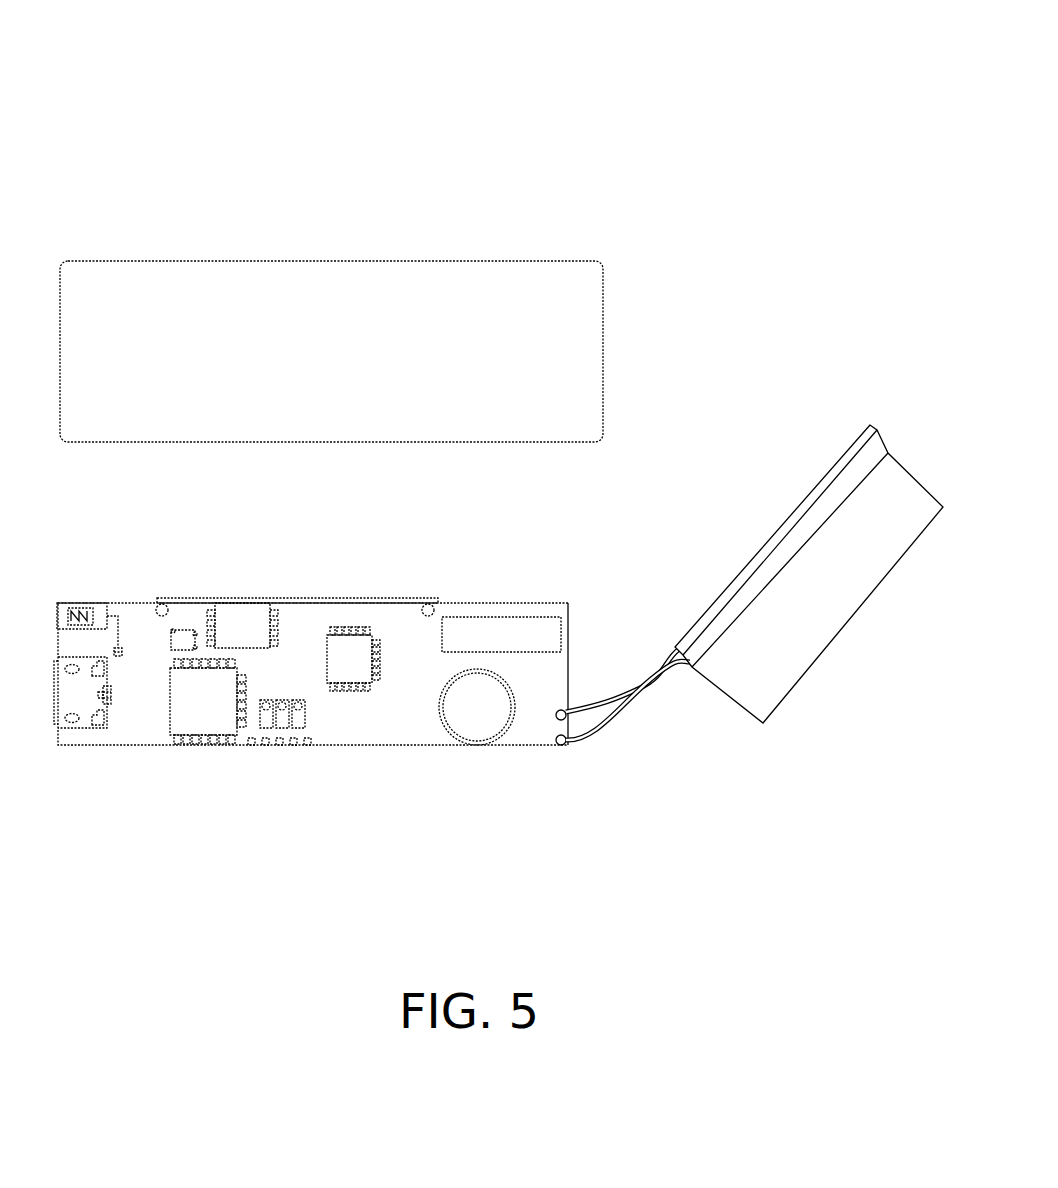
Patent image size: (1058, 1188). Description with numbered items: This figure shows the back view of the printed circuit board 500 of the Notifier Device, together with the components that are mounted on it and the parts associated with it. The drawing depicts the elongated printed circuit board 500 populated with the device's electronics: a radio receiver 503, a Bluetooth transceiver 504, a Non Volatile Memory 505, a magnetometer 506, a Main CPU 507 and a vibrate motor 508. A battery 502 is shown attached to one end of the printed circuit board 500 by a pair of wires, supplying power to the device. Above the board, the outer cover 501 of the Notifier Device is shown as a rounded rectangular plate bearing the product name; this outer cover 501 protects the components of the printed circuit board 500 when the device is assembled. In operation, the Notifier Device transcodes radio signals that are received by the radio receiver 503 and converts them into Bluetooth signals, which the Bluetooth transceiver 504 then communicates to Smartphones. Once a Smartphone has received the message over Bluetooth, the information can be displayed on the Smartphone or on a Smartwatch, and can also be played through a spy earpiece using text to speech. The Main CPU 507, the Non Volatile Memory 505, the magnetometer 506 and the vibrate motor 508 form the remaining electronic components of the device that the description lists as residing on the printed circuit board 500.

The printed circuit board 500 is at (720, 125).
The outer cover 501 is at (422, 272).
The battery 502 is at (818, 632).
The radio receiver 503 is at (520, 632).
The Bluetooth transceiver 504 is at (465, 722).
The Non Volatile Memory 505 is at (350, 642).
The magnetometer 506 is at (232, 617).
The Main CPU 507 is at (85, 603).
The vibrate motor 508 is at (197, 728).